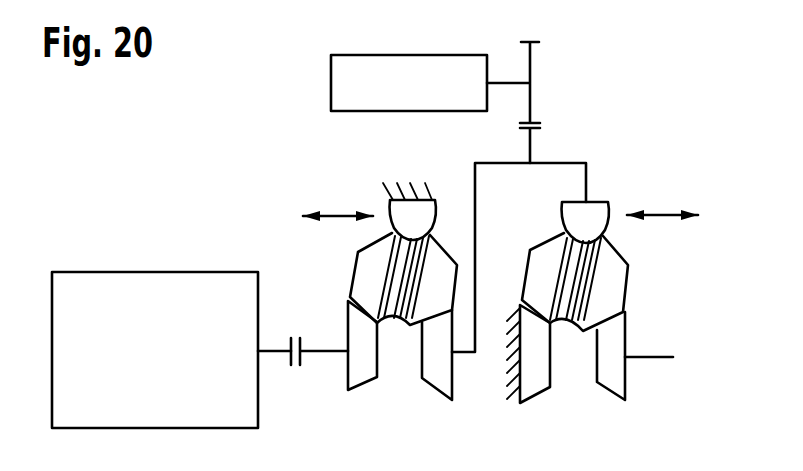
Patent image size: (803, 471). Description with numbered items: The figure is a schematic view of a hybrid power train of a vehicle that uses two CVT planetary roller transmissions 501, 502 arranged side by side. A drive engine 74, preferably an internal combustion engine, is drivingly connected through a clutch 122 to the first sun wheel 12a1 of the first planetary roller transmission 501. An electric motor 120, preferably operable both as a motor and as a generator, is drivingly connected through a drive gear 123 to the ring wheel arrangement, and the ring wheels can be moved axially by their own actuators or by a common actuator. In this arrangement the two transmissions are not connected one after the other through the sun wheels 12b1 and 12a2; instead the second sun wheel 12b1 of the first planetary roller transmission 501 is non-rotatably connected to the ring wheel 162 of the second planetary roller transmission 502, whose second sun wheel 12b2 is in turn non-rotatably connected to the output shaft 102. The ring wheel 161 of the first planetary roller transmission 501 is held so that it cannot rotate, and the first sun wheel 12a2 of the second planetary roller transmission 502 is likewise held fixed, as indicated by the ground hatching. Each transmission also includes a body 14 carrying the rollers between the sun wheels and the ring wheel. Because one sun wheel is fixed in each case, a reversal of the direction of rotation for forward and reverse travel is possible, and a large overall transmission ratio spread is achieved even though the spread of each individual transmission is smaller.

The electric motor 120 is at (331, 84).
The drive gear 123 is at (531, 76).
The drive engine 74 is at (160, 283).
The clutch 122 is at (297, 336).
The ring wheel of the first planetary roller transmission 161 is at (387, 208).
The ring wheel of the second planetary roller transmission 162 is at (600, 202).
The synchronizer body 14 is at (358, 252).
The first sun wheel of the first planetary roller transmission 12a1 is at (360, 380).
The second sun wheel of the first planetary roller transmission 12b1 is at (443, 378).
The first planetary roller transmission 501 is at (402, 355).
The first sun wheel of the second planetary roller transmission 12a2 is at (533, 378).
The second sun wheel of the second planetary roller transmission 12b2 is at (613, 370).
The second planetary roller transmission 502 is at (575, 355).
The output shaft 102 is at (662, 355).